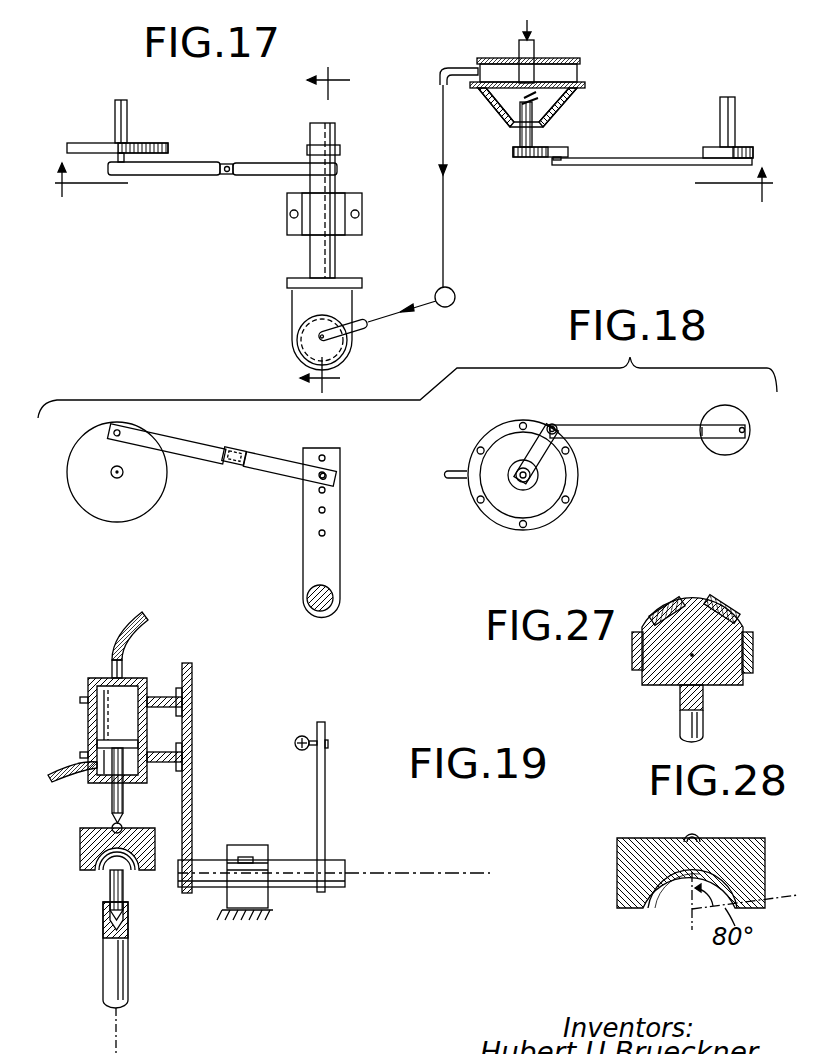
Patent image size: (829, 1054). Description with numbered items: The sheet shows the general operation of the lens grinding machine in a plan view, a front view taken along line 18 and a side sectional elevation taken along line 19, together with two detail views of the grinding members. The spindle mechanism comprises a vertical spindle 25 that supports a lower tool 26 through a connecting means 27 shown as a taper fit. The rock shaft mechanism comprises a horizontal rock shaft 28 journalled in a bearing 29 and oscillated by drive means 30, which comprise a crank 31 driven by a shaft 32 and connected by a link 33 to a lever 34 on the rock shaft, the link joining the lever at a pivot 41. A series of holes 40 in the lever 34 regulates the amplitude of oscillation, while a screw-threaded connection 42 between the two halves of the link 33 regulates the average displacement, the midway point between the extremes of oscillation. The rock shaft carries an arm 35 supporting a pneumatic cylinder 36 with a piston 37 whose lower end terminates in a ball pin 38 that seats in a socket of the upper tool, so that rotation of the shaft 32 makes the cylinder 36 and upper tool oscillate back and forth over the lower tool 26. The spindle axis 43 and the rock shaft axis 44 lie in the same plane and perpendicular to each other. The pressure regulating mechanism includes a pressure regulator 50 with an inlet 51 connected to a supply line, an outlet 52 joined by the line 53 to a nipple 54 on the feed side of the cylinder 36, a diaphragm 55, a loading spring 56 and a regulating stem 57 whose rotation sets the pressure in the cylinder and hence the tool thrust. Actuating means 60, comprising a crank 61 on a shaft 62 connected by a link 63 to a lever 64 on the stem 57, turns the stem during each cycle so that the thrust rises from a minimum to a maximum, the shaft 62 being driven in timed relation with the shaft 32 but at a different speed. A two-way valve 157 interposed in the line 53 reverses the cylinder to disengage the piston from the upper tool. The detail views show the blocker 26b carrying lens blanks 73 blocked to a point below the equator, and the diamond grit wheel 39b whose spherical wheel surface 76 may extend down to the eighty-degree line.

In FIG. 17, the section line 18— 18 is at (414, 183).
In FIG. 17, the section line 19— 19 is at (341, 230).
In FIG. 19, the vertical spindle 25 is at (128, 960).
In FIG. 19, the lower tool 26 is at (100, 870).
In FIG. 27, the blocker 26b is at (660, 686).
In FIG. 19, the connecting means 27 is at (128, 913).
In FIG. 17, the rock shaft 28 is at (310, 246).
In FIG. 18, the rock shaft 28 is at (306, 586).
In FIG. 19, the rock shaft 28 is at (285, 860).
In FIG. 17, the bearing 29 is at (362, 203).
In FIG. 19, the bearing 29 is at (270, 905).
In FIG. 17, the drive means 30 is at (186, 137).
In FIG. 17, the crank 31 is at (75, 143).
In FIG. 18, the crank 31 is at (88, 485).
In FIG. 17, the shaft 32 is at (128, 104).
In FIG. 17, the link 33 is at (190, 175).
In FIG. 18, the link 33 is at (192, 444).
In FIG. 19, the link 33 is at (300, 750).
In FIG. 17, the lever 34 is at (342, 150).
In FIG. 18, the lever 34 is at (340, 505).
In FIG. 19, the lever 34 is at (327, 796).
In FIG. 17, the arm 35 is at (362, 280).
In FIG. 19, the arm 35 is at (193, 680).
In FIG. 17, the pneumatic cylinder 36 is at (298, 316).
In FIG. 19, the pneumatic cylinder 36 is at (88, 718).
In FIG. 19, the piston 37 is at (124, 803).
In FIG. 19, the ball pin 38 is at (110, 826).
In FIG. 28, the wheel 39b is at (617, 840).
In FIG. 18, the holes 40 is at (318, 511).
In FIG. 18, the pivot pin 41 is at (336, 468).
In FIG. 17, the screw-threaded connection 42 is at (226, 163).
In FIG. 18, the screw-threaded connection 42 is at (226, 463).
In FIG. 19, the spindle axis 43 is at (118, 1040).
In FIG. 19, the rock shaft axis 44 is at (433, 874).
In FIG. 17, the pressure regulator 50 is at (590, 76).
In FIG. 18, the pressure regulator 50 is at (563, 508).
In FIG. 17, the inlet 51 is at (537, 45).
In FIG. 17, the outlet 52 is at (450, 66).
In FIG. 18, the outlet 52 is at (458, 468).
In FIG. 17, the line 53 is at (446, 254).
In FIG. 17, the nipple 54 is at (300, 333).
In FIG. 19, the nipple 54 is at (112, 655).
In FIG. 17, the diaphragm 55 is at (560, 88).
In FIG. 17, the loading spring 56 is at (540, 100).
In FIG. 17, the regulating stem 57 is at (540, 140).
In FIG. 17, the actuating means 60 is at (714, 126).
In FIG. 18, the actuating means 60 is at (698, 443).
In FIG. 17, the crank 61 is at (755, 150).
In FIG. 18, the crank 61 is at (733, 442).
In FIG. 17, the shaft 62 is at (737, 105).
In FIG. 17, the link 63 is at (660, 166).
In FIG. 18, the link 63 is at (630, 425).
In FIG. 17, the lever 64 is at (540, 158).
In FIG. 18, the lever 64 is at (545, 420).
In FIG. 27, the lens blanks 73 is at (712, 597).
In FIG. 28, the wheel surface 76 is at (652, 908).
In FIG. 17, the two-way valve 157 is at (455, 292).